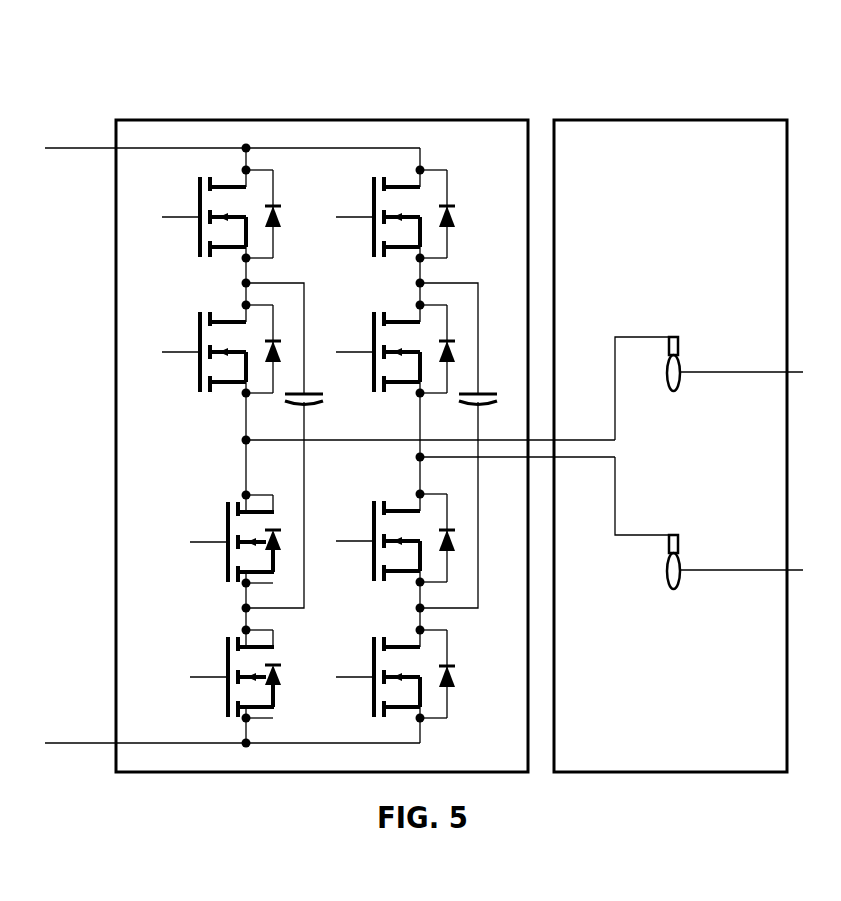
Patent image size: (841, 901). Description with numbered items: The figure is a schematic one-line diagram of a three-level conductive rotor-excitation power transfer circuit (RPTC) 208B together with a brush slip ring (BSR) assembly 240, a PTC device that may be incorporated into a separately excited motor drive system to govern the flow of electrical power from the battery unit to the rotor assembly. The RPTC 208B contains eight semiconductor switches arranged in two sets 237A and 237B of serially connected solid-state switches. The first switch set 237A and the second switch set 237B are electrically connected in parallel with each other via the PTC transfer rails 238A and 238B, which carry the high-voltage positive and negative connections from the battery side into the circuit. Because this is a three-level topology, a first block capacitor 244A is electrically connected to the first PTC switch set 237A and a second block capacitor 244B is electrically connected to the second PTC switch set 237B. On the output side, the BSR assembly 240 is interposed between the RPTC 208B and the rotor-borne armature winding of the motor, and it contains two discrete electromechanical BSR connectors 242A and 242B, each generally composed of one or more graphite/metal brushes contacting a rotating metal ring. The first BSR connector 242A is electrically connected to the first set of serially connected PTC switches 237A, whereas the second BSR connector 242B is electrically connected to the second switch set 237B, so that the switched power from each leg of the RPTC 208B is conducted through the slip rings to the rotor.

The 3-level conductive rotor-excitation power transfer circuit (RPTC) 208B is at (286, 84).
The brush slip ring (BSR) assembly 240 is at (621, 84).
The PTC transfer rail 238A is at (134, 147).
The PTC transfer rail 238B is at (150, 746).
The first set of serially connected solid-state switches 237A is at (220, 146).
The second set of serially connected solid-state switches 237B is at (375, 145).
The first block capacitor 244A is at (313, 391).
The second block capacitor 244B is at (488, 391).
The first BSR connector 242A is at (680, 382).
The second BSR connector 242B is at (680, 580).